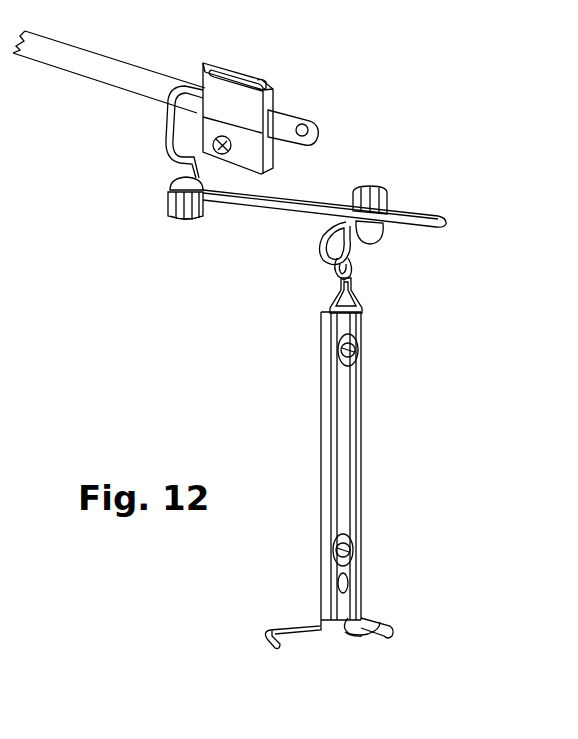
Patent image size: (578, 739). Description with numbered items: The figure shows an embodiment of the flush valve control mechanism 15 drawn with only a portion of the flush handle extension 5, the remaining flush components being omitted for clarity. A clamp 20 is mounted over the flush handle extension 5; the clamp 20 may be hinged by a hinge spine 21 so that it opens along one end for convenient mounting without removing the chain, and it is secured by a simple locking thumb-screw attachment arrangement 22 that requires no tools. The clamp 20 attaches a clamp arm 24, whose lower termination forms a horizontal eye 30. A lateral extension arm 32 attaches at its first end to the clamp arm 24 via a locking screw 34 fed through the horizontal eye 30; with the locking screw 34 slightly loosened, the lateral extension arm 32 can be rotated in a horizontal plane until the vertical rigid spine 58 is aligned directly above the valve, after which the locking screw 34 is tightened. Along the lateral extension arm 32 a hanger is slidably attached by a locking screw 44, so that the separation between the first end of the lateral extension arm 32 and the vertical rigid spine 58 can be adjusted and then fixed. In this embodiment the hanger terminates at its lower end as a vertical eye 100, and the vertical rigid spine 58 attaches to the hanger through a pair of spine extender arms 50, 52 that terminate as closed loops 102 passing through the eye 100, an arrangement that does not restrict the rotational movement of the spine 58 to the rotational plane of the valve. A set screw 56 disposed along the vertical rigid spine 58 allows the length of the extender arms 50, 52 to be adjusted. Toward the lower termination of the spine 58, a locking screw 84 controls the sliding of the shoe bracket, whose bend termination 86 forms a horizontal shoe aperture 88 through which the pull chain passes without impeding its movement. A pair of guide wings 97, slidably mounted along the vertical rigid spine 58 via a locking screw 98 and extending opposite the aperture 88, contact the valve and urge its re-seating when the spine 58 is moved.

The flush handle extension 5 is at (103, 55).
The flush valve control mechanism 15 is at (506, 316).
The clamp 20 is at (275, 96).
The hinge spine 21 is at (245, 65).
The locking thumb-screw attachment arrangement 22 is at (219, 154).
The clamp arm 24 is at (165, 124).
The horizontal eye 30 is at (170, 196).
The lateral extension arm 32 is at (298, 190).
The locking screw 34 is at (180, 222).
The locking screw 44 is at (378, 186).
The extender arm 50 is at (333, 453).
The extender arm 52 is at (363, 292).
The set screw 56 is at (358, 346).
The vertical rigid spine 58 is at (362, 383).
The locking screw 84 is at (358, 545).
The bend termination 86 is at (382, 634).
The horizontal shoe aperture 88 is at (346, 636).
The guide wings 97 is at (258, 636).
The locking screw 98 is at (355, 578).
The vertical eye 100 is at (318, 246).
The closed loops 102 is at (332, 270).